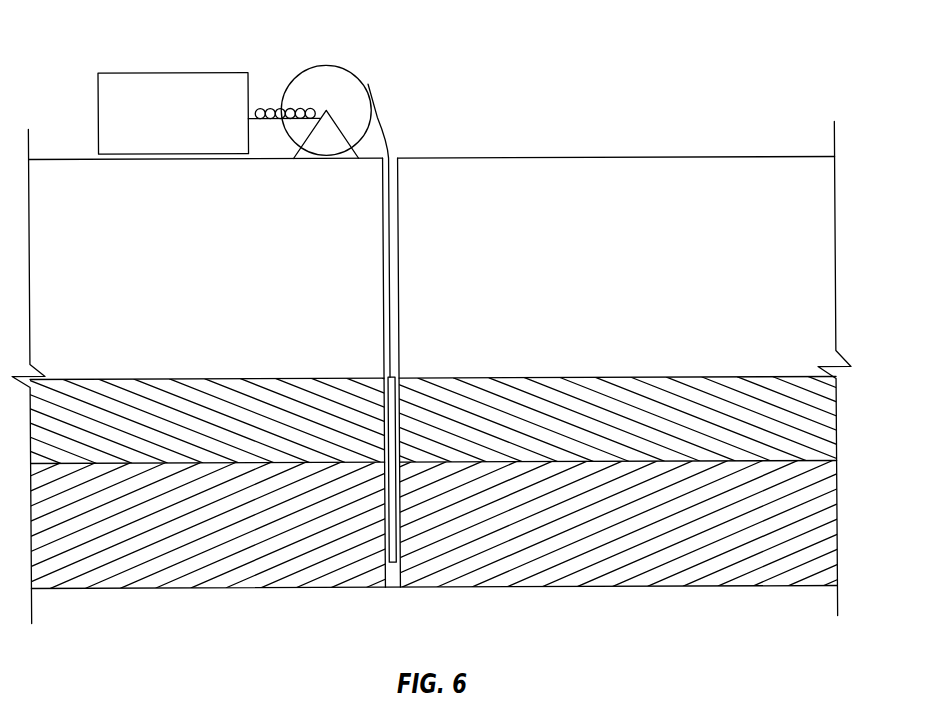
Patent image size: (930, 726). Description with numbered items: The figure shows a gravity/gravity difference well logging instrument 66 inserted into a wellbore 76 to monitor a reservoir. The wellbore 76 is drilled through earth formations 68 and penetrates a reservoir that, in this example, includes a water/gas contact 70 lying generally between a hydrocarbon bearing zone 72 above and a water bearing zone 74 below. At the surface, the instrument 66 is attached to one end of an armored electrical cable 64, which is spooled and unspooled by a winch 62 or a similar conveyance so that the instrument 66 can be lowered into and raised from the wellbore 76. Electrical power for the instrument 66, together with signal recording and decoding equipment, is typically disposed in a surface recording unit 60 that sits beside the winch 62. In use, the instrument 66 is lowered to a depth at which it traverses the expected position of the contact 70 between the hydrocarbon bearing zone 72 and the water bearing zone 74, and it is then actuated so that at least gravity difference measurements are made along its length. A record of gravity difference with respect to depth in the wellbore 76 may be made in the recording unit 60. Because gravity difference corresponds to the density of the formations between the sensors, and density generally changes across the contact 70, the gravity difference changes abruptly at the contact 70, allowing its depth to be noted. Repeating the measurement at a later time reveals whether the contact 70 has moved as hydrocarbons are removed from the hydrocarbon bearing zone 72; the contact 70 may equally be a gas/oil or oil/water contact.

The surface recording unit 60 is at (173, 72).
The winch 62 is at (328, 63).
The armored electrical cable 64 is at (383, 131).
The gravity/gravity difference well logging instrument 66 is at (388, 413).
The earth formations 68 is at (713, 392).
The water/gas contact 70 is at (823, 457).
The hydrocarbon bearing zone 72 is at (587, 375).
The water bearing zone 74 is at (582, 575).
The wellbore 76 is at (386, 263).